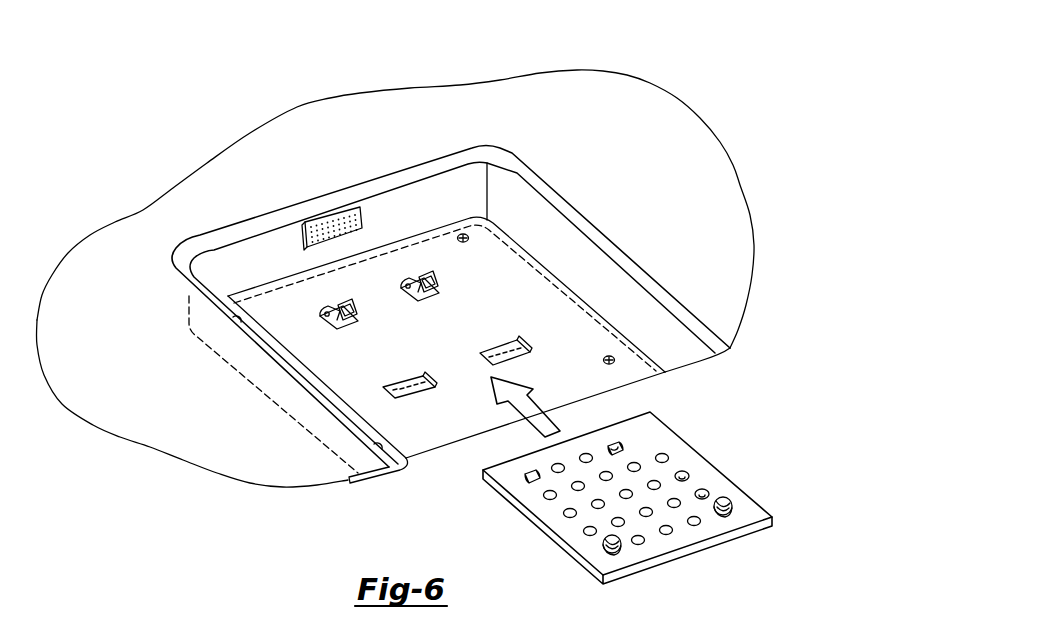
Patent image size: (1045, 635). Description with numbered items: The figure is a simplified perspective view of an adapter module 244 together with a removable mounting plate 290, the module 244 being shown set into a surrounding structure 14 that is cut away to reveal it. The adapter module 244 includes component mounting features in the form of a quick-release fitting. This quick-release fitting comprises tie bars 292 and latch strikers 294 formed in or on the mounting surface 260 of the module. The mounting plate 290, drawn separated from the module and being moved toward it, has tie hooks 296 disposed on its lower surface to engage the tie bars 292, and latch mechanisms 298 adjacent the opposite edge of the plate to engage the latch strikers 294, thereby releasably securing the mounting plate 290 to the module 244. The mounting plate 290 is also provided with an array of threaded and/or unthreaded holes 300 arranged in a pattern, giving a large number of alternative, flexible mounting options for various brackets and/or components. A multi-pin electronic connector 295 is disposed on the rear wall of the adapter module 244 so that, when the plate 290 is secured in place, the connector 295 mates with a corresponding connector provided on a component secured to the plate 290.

The vehicle body / door trim panel 14 is at (642, 97).
The adapter module 244 is at (250, 337).
The mounting surface 260 is at (503, 318).
The mounting plate 290 is at (693, 452).
The tie bars 292 is at (333, 307).
The latch strikers 294 is at (416, 396).
The multi-pin electronic connector 295 is at (361, 219).
The tie hooks 296 is at (623, 445).
The latch mechanisms 298 is at (733, 508).
The holes 300 is at (690, 474).